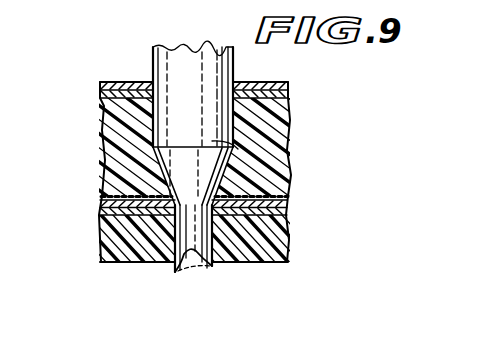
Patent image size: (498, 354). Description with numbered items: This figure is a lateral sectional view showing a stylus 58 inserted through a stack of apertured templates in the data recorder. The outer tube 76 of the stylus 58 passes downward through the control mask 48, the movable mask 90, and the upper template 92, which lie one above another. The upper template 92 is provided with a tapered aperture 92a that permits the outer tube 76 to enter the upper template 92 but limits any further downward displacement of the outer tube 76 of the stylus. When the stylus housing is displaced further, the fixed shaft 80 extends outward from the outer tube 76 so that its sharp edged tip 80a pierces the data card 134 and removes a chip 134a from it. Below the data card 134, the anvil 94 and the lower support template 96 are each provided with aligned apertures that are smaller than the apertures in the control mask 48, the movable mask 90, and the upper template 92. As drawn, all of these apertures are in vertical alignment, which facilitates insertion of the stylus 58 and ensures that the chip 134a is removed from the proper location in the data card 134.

The control mask 48 is at (108, 83).
The stylus 58 is at (146, 55).
The outer tube 76 is at (192, 50).
The fixed shaft 80 is at (232, 250).
The sharp edged tip 80a is at (172, 276).
The movable mask 90 is at (103, 91).
The upper template 92 is at (105, 133).
The tapered aperture 92a is at (238, 148).
The anvil 94 is at (100, 210).
The lower support template 96 is at (101, 242).
The data card 134 is at (100, 198).
The chip 134a is at (189, 274).